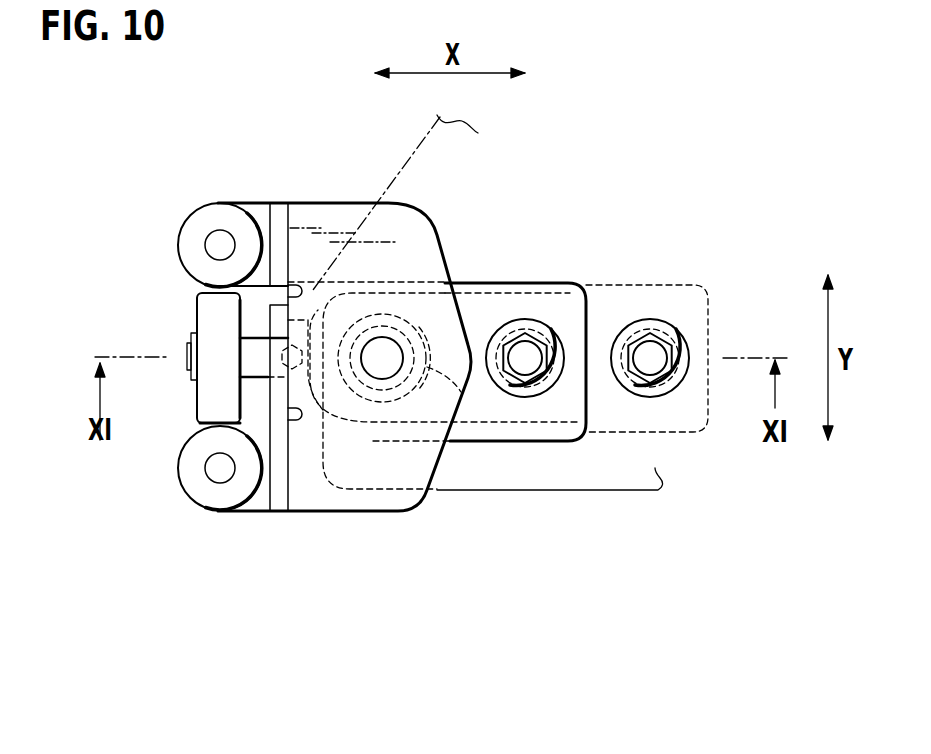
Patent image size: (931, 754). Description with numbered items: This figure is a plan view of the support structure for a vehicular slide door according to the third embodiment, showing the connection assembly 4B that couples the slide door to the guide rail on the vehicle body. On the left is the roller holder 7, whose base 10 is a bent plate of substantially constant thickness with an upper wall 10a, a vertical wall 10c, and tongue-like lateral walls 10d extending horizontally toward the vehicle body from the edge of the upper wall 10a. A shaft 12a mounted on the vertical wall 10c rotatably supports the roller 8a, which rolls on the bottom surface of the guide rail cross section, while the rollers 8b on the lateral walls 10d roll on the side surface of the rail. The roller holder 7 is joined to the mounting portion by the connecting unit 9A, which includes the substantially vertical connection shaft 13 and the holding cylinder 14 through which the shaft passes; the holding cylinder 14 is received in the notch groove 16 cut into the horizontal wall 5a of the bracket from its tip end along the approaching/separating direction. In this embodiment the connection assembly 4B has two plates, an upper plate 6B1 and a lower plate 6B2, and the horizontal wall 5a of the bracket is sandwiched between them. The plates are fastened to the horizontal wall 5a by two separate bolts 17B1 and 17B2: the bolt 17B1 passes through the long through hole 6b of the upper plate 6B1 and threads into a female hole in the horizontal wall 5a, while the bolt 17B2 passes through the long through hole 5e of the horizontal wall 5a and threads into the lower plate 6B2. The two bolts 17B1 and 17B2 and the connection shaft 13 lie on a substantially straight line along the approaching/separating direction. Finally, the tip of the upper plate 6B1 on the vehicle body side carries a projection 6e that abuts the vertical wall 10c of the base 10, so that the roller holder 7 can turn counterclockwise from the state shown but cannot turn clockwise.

The connection assembly 4B is at (300, 153).
The roller holder 7 is at (432, 211).
The base 10 is at (308, 517).
The upper wall 10a is at (360, 213).
The vertical wall 10c is at (268, 390).
The lateral walls 10d is at (244, 203).
The projection 6e is at (276, 284).
The roller 8a is at (207, 405).
The rollers 8b is at (212, 207).
The shaft 12a is at (258, 343).
The upper plate 6B1 is at (551, 283).
The lower plate 6B2 is at (708, 322).
The long through hole 6b is at (503, 398).
The horizontal wall 5a is at (557, 491).
The long through hole 5e is at (678, 396).
The bolt 17B1 is at (522, 338).
The bolt 17B2 is at (657, 340).
The notch groove 16 is at (461, 395).
The connecting unit 9A is at (388, 469).
The connection shaft 13 is at (382, 368).
The holding cylinder 14 is at (412, 375).